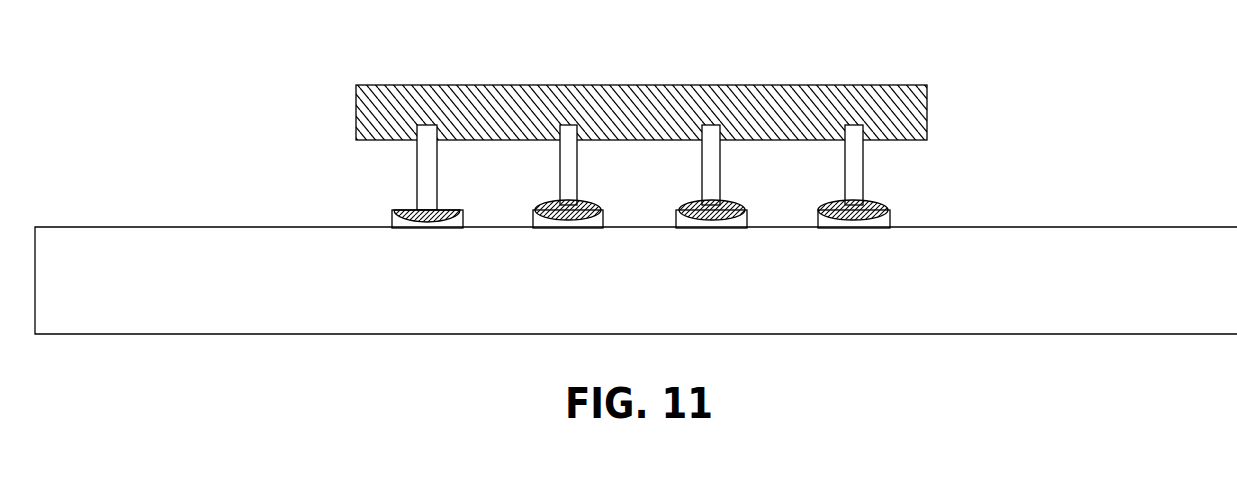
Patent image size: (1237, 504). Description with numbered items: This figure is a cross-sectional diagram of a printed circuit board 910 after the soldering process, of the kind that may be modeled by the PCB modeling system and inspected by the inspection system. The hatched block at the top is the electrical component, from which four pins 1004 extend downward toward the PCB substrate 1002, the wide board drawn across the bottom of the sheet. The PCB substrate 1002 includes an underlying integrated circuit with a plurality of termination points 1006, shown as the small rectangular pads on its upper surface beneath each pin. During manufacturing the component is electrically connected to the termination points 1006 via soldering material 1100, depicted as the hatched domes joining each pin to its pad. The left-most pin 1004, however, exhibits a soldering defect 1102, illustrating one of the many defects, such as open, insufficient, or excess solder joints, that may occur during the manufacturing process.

The printed circuit board 910 is at (1060, 80).
The PCB substrate 1002 is at (997, 226).
The pins 1004 is at (700, 167).
The termination points 1006 is at (890, 218).
The soldering material 1100 is at (838, 202).
The soldering defect 1102 is at (387, 193).